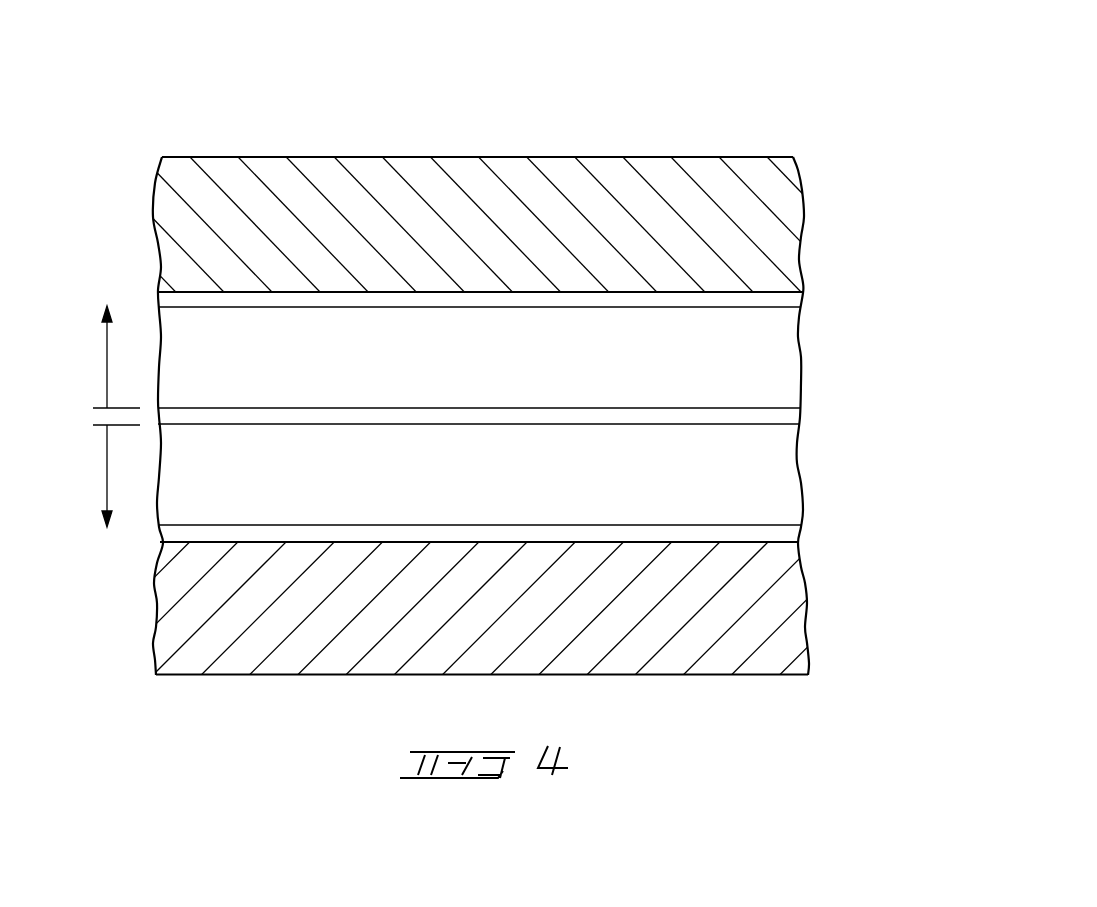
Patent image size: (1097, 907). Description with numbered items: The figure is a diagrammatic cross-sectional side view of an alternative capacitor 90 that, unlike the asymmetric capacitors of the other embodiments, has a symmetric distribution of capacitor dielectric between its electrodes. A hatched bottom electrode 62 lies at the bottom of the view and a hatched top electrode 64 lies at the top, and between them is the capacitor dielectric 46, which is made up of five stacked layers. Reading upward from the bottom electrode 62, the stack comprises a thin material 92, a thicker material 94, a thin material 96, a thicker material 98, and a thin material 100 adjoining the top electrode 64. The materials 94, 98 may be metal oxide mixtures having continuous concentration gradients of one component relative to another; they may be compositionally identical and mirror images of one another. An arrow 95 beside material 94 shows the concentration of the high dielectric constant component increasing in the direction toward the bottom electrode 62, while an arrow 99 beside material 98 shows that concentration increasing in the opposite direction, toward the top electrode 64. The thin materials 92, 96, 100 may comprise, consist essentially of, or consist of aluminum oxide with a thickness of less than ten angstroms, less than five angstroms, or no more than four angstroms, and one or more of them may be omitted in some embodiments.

The capacitor 90 is at (750, 106).
The top electrode 64 is at (614, 218).
The bottom electrode 62 is at (617, 616).
The capacitor dielectric 46 is at (848, 292).
The material 100 is at (781, 302).
The material 98 is at (766, 364).
The material 96 is at (783, 417).
The material 94 is at (766, 480).
The material 92 is at (762, 533).
The arrow 99 is at (104, 358).
The arrow 95 is at (104, 467).